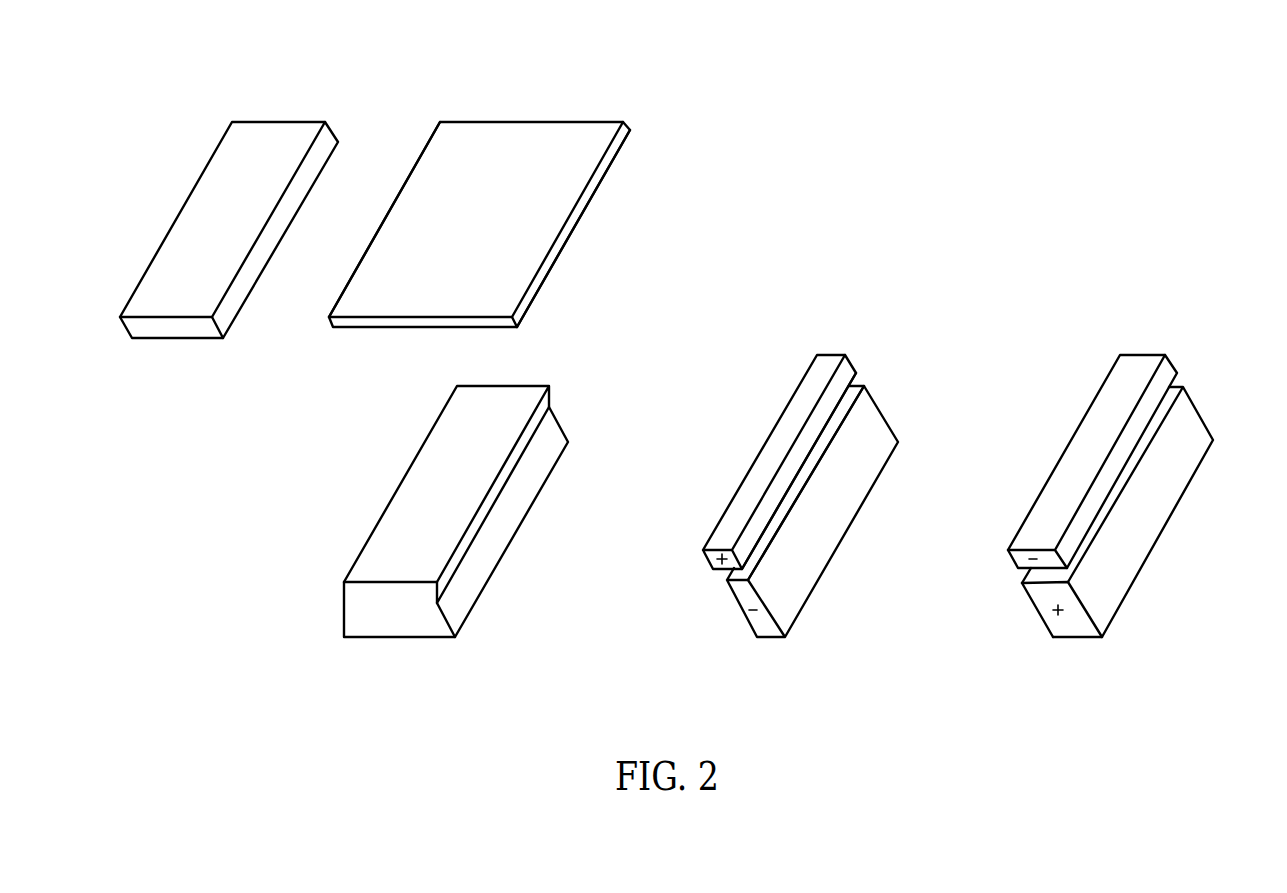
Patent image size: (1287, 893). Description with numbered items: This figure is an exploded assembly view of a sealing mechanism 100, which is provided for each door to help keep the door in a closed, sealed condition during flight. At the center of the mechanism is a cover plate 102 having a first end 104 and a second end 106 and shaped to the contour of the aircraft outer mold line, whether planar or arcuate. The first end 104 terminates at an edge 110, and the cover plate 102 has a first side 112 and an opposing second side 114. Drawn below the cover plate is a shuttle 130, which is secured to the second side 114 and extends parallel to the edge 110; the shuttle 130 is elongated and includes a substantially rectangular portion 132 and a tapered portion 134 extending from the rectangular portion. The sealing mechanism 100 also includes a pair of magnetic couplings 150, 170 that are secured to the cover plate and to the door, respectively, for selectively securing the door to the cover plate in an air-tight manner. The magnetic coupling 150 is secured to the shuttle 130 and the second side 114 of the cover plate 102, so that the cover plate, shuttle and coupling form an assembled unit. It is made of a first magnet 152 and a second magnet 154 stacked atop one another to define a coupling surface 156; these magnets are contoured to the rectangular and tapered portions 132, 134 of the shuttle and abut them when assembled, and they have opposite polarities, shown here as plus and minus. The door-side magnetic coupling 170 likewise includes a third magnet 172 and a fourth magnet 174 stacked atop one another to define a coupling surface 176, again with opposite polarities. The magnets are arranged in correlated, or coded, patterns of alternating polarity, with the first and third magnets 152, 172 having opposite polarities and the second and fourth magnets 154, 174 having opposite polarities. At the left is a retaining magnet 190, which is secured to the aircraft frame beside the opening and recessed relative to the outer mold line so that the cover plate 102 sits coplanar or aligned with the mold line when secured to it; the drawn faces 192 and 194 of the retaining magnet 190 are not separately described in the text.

The sealing mechanism 100 is at (1240, 60).
The cover plate 102 is at (503, 196).
The first end 104 is at (580, 255).
The second end 106 is at (415, 117).
The edge 110 is at (624, 137).
The first side 112 is at (546, 133).
The second side 114 is at (532, 306).
The shuttle 130 is at (472, 528).
The rectangular portion 132 is at (548, 403).
The tapered portion 134 is at (502, 537).
The magnetic coupling 150 is at (816, 504).
The first magnet 152 is at (866, 355).
The second magnet 154 is at (907, 397).
The coupling surface 156 is at (782, 493).
The magnetic coupling 170 is at (1100, 480).
The third magnet 172 is at (1116, 487).
The fourth magnet 174 is at (1174, 578).
The coupling surface 176 is at (1010, 563).
The retaining magnet 190 is at (206, 258).
The cover top surface 192 is at (163, 239).
The cover front edge 194 is at (200, 340).